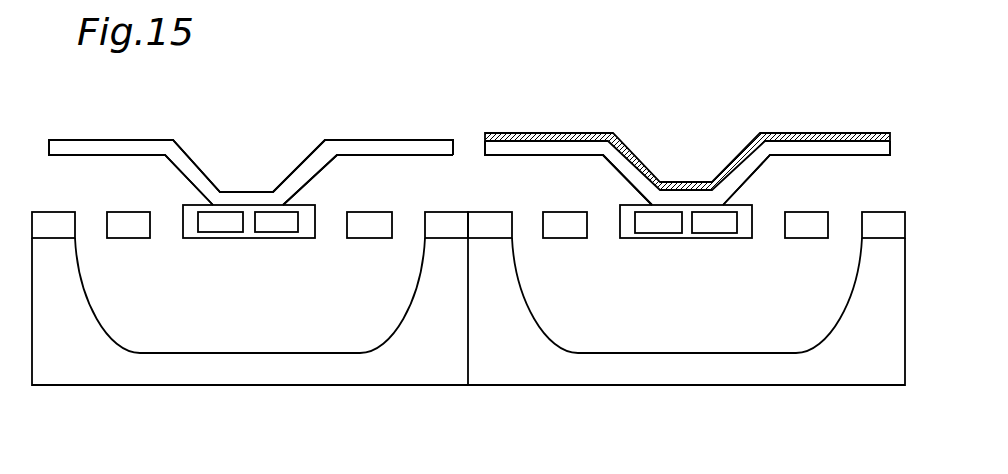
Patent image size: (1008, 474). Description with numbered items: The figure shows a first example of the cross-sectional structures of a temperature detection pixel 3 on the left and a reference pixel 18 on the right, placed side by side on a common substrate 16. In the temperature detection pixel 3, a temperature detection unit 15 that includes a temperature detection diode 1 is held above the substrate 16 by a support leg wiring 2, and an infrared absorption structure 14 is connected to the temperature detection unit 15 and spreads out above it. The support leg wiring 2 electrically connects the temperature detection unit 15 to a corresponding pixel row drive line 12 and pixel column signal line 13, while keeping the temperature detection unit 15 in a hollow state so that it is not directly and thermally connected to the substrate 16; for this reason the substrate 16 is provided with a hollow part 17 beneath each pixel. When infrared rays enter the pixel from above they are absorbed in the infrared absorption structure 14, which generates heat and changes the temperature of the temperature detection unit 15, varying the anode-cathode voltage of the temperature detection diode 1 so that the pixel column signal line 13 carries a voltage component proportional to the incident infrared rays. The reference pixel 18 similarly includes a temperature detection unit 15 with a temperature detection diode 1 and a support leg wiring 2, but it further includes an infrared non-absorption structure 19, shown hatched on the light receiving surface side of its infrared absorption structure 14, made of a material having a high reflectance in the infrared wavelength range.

The temperature detection diode 1 is at (277, 222).
The support leg wiring 2 is at (132, 228).
The temperature detection pixel 3 is at (455, 113).
The pixel row drive line 12 is at (447, 222).
The pixel column signal line 13 is at (53, 222).
The infrared absorption structure 14 is at (93, 150).
The temperature detection unit 15 is at (250, 240).
The substrate 16 is at (102, 368).
The hollow part 17 is at (248, 325).
The reference pixel 18 is at (485, 113).
The infrared non-absorption structure 19 is at (527, 137).